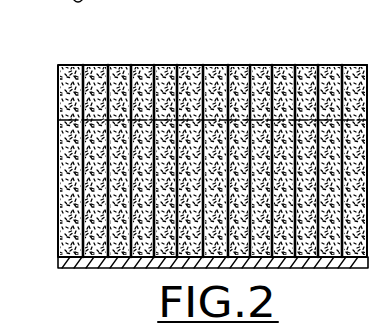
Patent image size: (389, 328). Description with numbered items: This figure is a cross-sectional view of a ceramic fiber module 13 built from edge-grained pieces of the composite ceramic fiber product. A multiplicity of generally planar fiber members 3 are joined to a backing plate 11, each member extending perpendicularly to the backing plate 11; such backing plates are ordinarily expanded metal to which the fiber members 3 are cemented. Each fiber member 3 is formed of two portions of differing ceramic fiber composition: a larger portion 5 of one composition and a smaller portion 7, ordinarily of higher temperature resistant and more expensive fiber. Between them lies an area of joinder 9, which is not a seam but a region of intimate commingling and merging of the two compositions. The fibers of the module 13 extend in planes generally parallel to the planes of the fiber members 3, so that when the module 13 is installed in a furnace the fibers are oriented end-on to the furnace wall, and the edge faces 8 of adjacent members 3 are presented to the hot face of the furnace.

The composite ceramic fiber member 3 is at (369, 196).
The portion 5 is at (82, 183).
The portion 7 is at (78, 88).
The edge faces 8 is at (292, 64).
The area of joinder 9 is at (84, 121).
The backing plate 11 is at (121, 268).
The module 13 is at (266, 50).